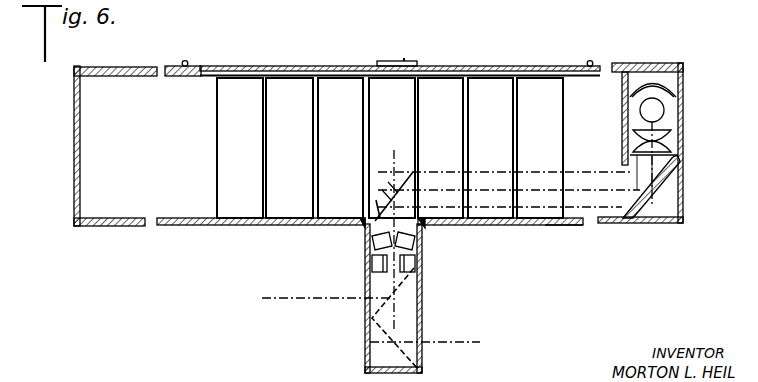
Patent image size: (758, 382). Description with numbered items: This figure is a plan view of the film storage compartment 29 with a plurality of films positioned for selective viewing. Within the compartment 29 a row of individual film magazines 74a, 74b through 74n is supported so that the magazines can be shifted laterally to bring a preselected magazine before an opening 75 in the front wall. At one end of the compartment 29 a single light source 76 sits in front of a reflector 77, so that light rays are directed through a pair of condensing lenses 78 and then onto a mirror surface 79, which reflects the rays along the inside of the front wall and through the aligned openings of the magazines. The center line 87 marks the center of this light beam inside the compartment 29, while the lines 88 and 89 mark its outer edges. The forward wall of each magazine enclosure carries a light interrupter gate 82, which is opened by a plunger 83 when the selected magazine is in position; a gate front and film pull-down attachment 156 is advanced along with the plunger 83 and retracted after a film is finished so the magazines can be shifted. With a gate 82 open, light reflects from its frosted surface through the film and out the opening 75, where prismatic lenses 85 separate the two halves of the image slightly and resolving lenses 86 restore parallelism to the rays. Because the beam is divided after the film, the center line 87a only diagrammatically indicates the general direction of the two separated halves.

The film storage compartment 29 is at (176, 238).
The film magazine 74a is at (250, 135).
The film magazine 74b is at (298, 135).
The film magazine 74n is at (545, 132).
The light interrupter gate 82 is at (396, 190).
The gate front and film pull-down attachment 156 is at (374, 220).
The outer edge line of light beam 88 is at (500, 163).
The center line of light beam 87 is at (577, 190).
The center line of separated beam halves 87a is at (395, 292).
The reflector 77 is at (668, 70).
The light source 76 is at (665, 112).
The condensing lenses 78 is at (683, 140).
The mirror surface 79 is at (683, 167).
The outer edge line of light beam 89 is at (580, 224).
The plunger 83 is at (363, 221).
The opening 75 is at (421, 227).
The prismatic lenses 85 is at (421, 259).
The resolving lenses 86 is at (421, 273).